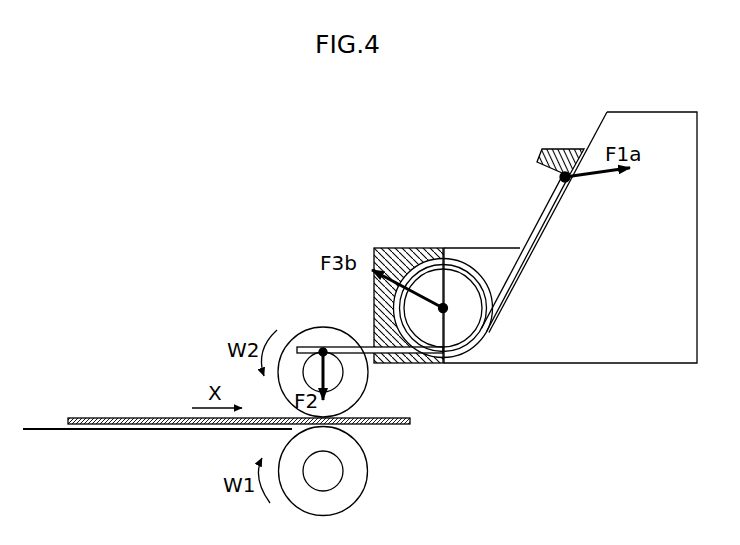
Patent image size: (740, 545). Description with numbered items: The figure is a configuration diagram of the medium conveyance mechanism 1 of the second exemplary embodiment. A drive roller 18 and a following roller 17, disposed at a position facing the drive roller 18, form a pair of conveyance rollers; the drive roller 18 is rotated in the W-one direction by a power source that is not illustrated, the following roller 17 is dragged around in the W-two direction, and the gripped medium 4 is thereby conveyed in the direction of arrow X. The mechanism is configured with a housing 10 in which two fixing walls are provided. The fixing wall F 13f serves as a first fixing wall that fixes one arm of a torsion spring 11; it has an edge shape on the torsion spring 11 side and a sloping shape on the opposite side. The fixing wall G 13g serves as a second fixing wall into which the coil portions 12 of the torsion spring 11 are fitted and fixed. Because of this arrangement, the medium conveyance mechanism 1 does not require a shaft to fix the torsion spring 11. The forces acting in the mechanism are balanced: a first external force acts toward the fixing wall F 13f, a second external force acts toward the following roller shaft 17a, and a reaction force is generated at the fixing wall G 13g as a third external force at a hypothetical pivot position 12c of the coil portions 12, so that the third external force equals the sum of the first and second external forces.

The medium conveyance mechanism 1 is at (250, 273).
The medium 4 is at (120, 418).
The housing 10 is at (665, 132).
The torsion spring 11 is at (513, 205).
The coil portions 12 is at (460, 310).
The hypothetical pivot position 12c is at (445, 312).
The fixing wall F 13f is at (558, 148).
The fixing wall G 13g is at (392, 247).
The following roller 17 is at (343, 397).
The following roller shaft 17a is at (333, 375).
The drive roller 18 is at (360, 478).